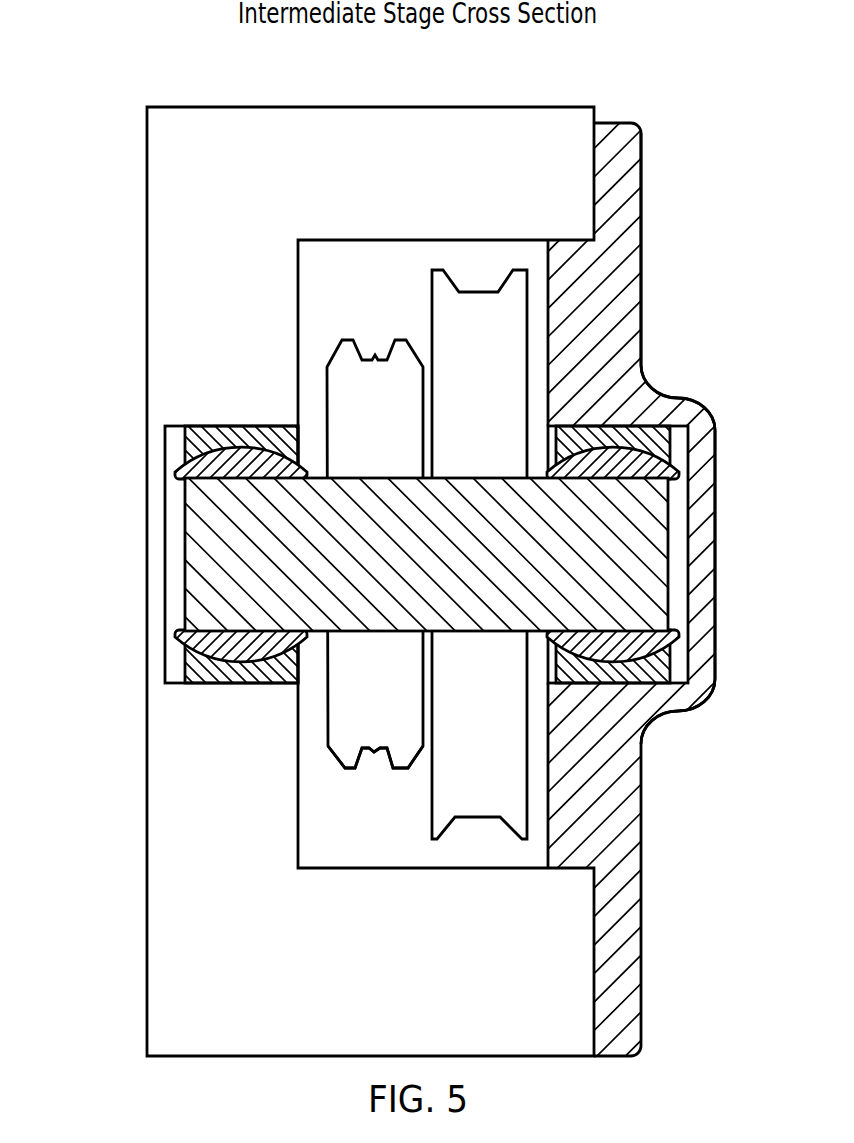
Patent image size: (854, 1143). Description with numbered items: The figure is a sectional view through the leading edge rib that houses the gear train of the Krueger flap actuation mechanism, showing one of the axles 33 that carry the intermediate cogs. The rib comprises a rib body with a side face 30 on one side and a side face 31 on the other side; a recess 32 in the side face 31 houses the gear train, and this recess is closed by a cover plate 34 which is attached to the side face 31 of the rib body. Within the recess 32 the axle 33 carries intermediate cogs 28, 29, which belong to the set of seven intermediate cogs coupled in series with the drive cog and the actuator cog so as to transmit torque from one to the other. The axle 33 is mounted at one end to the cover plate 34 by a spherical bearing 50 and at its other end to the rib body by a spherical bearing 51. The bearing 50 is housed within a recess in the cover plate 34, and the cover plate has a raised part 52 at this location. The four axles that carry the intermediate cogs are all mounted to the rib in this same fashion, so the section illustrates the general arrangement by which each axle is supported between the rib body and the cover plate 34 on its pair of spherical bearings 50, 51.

The intermediate cog 28 is at (481, 303).
The intermediate cog 29 is at (342, 747).
The side face 30 is at (146, 760).
The side face 31 is at (594, 183).
The recess 32 is at (380, 309).
The axle 33 is at (217, 563).
The cover plate 34 is at (641, 268).
The spherical bearing 50 is at (647, 450).
The spherical bearing 51 is at (213, 442).
The raised part 52 is at (717, 552).